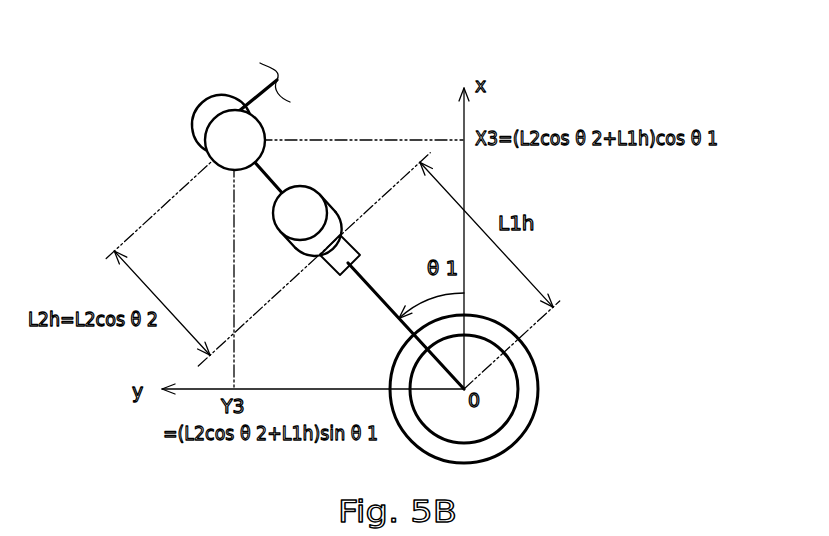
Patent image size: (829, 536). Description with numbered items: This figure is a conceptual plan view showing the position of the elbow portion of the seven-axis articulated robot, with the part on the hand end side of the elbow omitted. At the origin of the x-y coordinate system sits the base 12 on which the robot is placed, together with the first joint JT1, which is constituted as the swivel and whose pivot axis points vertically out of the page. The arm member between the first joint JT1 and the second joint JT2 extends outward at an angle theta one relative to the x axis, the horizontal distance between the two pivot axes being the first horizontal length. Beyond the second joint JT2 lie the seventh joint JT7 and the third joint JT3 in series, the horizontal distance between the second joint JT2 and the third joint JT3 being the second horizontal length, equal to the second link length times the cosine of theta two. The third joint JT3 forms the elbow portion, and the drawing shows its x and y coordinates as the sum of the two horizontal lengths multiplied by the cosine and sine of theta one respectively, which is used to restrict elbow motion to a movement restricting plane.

The third joint JT3 is at (205, 110).
The seventh joint JT7 is at (332, 205).
The second joint JT2 is at (328, 257).
The first joint JT1 is at (503, 386).
The base 12 is at (527, 408).